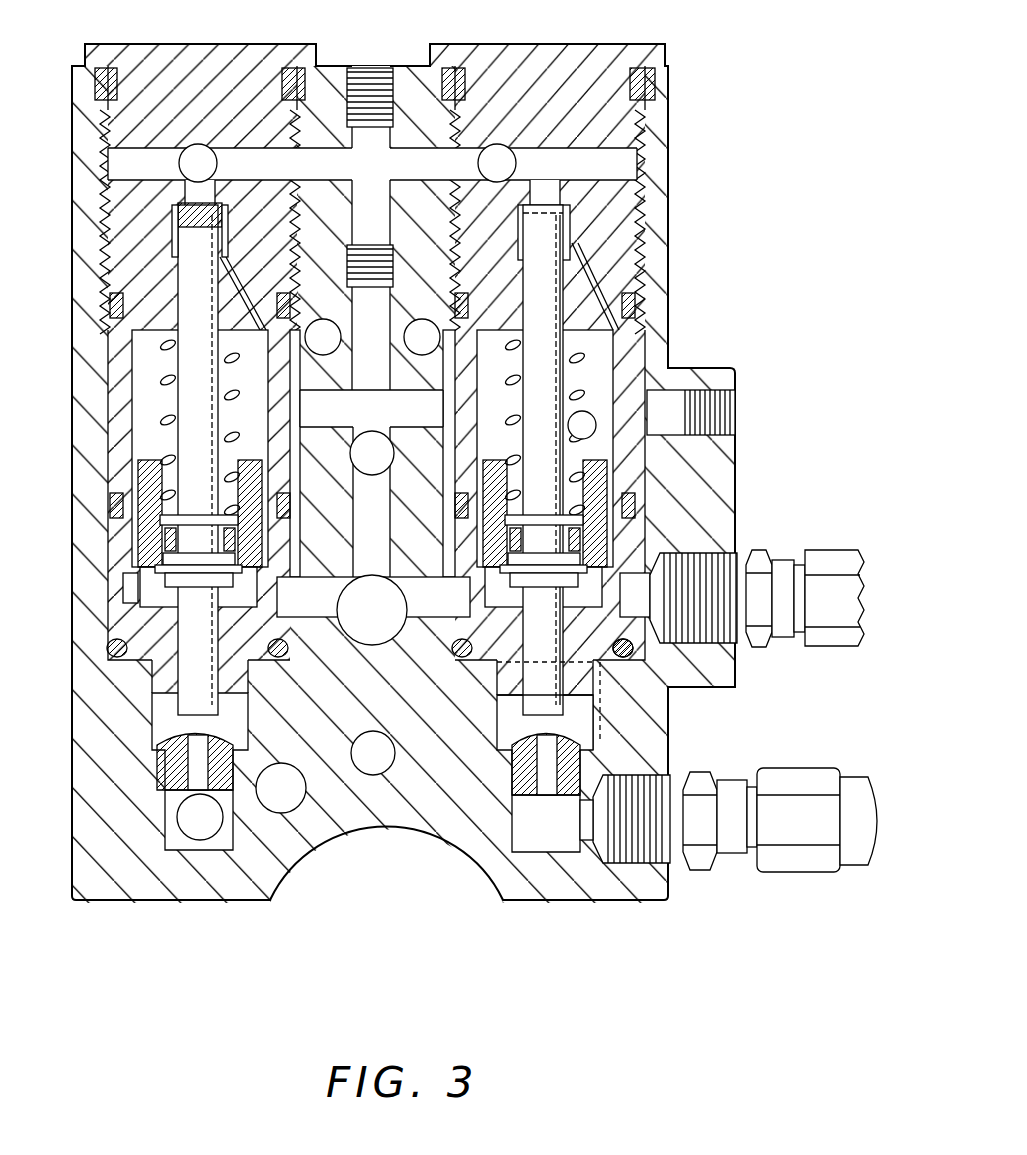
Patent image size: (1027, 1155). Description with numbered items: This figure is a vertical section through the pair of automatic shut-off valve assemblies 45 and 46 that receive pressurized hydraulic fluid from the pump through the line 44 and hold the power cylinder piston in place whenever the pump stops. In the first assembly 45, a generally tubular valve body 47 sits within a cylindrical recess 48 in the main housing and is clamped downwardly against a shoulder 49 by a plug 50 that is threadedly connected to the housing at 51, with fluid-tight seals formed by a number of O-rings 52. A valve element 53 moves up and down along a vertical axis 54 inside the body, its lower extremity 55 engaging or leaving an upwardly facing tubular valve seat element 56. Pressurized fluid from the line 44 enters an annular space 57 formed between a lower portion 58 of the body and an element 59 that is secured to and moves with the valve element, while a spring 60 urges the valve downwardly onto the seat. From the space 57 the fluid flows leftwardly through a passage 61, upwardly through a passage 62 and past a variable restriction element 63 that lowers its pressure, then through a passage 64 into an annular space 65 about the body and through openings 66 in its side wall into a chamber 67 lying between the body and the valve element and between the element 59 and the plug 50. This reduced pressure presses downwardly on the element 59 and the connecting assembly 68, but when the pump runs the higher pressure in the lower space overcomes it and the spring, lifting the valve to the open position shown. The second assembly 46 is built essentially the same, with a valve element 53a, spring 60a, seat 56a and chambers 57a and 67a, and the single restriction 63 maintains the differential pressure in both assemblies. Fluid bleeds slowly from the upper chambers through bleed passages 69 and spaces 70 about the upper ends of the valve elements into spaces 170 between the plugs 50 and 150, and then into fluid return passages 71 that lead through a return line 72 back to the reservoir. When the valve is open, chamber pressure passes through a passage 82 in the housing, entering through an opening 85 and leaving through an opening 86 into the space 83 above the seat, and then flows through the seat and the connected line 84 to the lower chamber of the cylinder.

The line 44 is at (825, 552).
The valve assembly 45 is at (650, 495).
The second valve assembly 46 is at (114, 627).
The valve body 47 is at (652, 356).
The cylindrical recess 48 is at (653, 357).
The shoulder 49 is at (670, 700).
The plug 50 is at (625, 213).
The threaded connection 51 is at (647, 131).
The O-rings 52 is at (640, 294).
The valve element 53 is at (530, 640).
The valve element 53a is at (188, 663).
The vertical axis 54 is at (550, 275).
The lower extremity 55 is at (527, 728).
The valve seat element 56 is at (510, 813).
The seat 56a is at (173, 717).
The annular space 57 is at (593, 583).
The chamber 57a is at (146, 592).
The lower portion 58 is at (460, 630).
The element 59 is at (490, 526).
The spring 60 is at (492, 368).
The spring 60a is at (170, 418).
The passage 61 is at (433, 595).
The passage 62 is at (367, 533).
The variable restriction element 63 is at (362, 480).
The passage 64 is at (430, 410).
The annular space 65 is at (453, 435).
The openings 66 is at (638, 432).
The chamber 67 is at (637, 513).
The chamber 67a is at (138, 360).
The assembly 68 is at (533, 520).
The bleed passages 69 is at (613, 297).
The spaces 70 is at (570, 222).
The fluid return passages 71 is at (462, 150).
The return line 72 is at (190, 164).
The passage 82 is at (637, 720).
The space 83 is at (507, 708).
The line 84 is at (798, 775).
The opening 85 is at (582, 412).
The opening 86 is at (573, 727).
The plug 150 is at (667, 64).
The spaces 170 is at (655, 164).